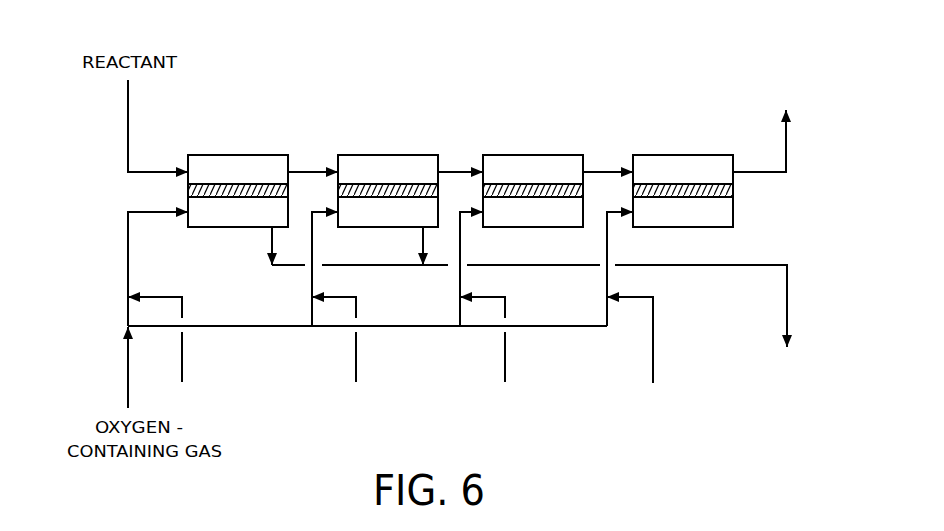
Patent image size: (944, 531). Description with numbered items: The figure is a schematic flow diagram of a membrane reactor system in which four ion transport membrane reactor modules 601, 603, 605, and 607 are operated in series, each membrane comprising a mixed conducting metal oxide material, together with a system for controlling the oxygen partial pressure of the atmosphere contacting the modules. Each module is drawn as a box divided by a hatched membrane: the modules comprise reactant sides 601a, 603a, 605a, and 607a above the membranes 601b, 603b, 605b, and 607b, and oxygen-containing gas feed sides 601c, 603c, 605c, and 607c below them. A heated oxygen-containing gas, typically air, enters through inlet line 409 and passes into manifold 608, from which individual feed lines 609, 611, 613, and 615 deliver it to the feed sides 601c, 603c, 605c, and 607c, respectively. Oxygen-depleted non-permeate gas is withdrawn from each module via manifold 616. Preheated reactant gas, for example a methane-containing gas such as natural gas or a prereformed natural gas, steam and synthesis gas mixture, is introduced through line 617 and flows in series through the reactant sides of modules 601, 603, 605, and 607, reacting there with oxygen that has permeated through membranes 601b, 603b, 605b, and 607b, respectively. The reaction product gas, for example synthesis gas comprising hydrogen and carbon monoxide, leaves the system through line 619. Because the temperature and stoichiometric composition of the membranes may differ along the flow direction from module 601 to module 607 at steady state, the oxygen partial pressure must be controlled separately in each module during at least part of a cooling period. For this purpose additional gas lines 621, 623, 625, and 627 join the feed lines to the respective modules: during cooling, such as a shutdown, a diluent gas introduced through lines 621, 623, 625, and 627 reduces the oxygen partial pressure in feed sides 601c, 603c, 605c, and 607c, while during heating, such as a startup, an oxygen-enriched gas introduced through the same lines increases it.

The membrane reactor module 601 is at (204, 155).
The reactant side 601a is at (215, 168).
The membrane 601b is at (242, 184).
The oxygen-containing gas feed side 601c is at (240, 213).
The membrane reactor module 603 is at (362, 155).
The reactant side 603a is at (378, 170).
The membrane 603b is at (400, 186).
The oxygen-containing gas feed side 603c is at (412, 213).
The membrane reactor module 605 is at (518, 155).
The reactant side 605a is at (526, 168).
The membrane 605b is at (548, 186).
The oxygen-containing gas feed side 605c is at (548, 213).
The membrane reactor module 607 is at (648, 155).
The reactant side 607a is at (665, 168).
The membrane 607b is at (695, 186).
The oxygen-containing gas feed side 607c is at (705, 215).
The reactant gas line 617 is at (128, 137).
The feed line 609 is at (128, 253).
The inlet line 409 is at (126, 380).
The manifold 608 is at (246, 327).
The product line 619 is at (753, 174).
The feed line 611 is at (312, 277).
The feed line 613 is at (460, 277).
The feed line 615 is at (607, 282).
The non-permeate manifold 616 is at (750, 268).
The additional gas line 621 is at (182, 352).
The additional gas line 623 is at (356, 355).
The additional gas line 625 is at (505, 357).
The additional gas line 627 is at (653, 355).